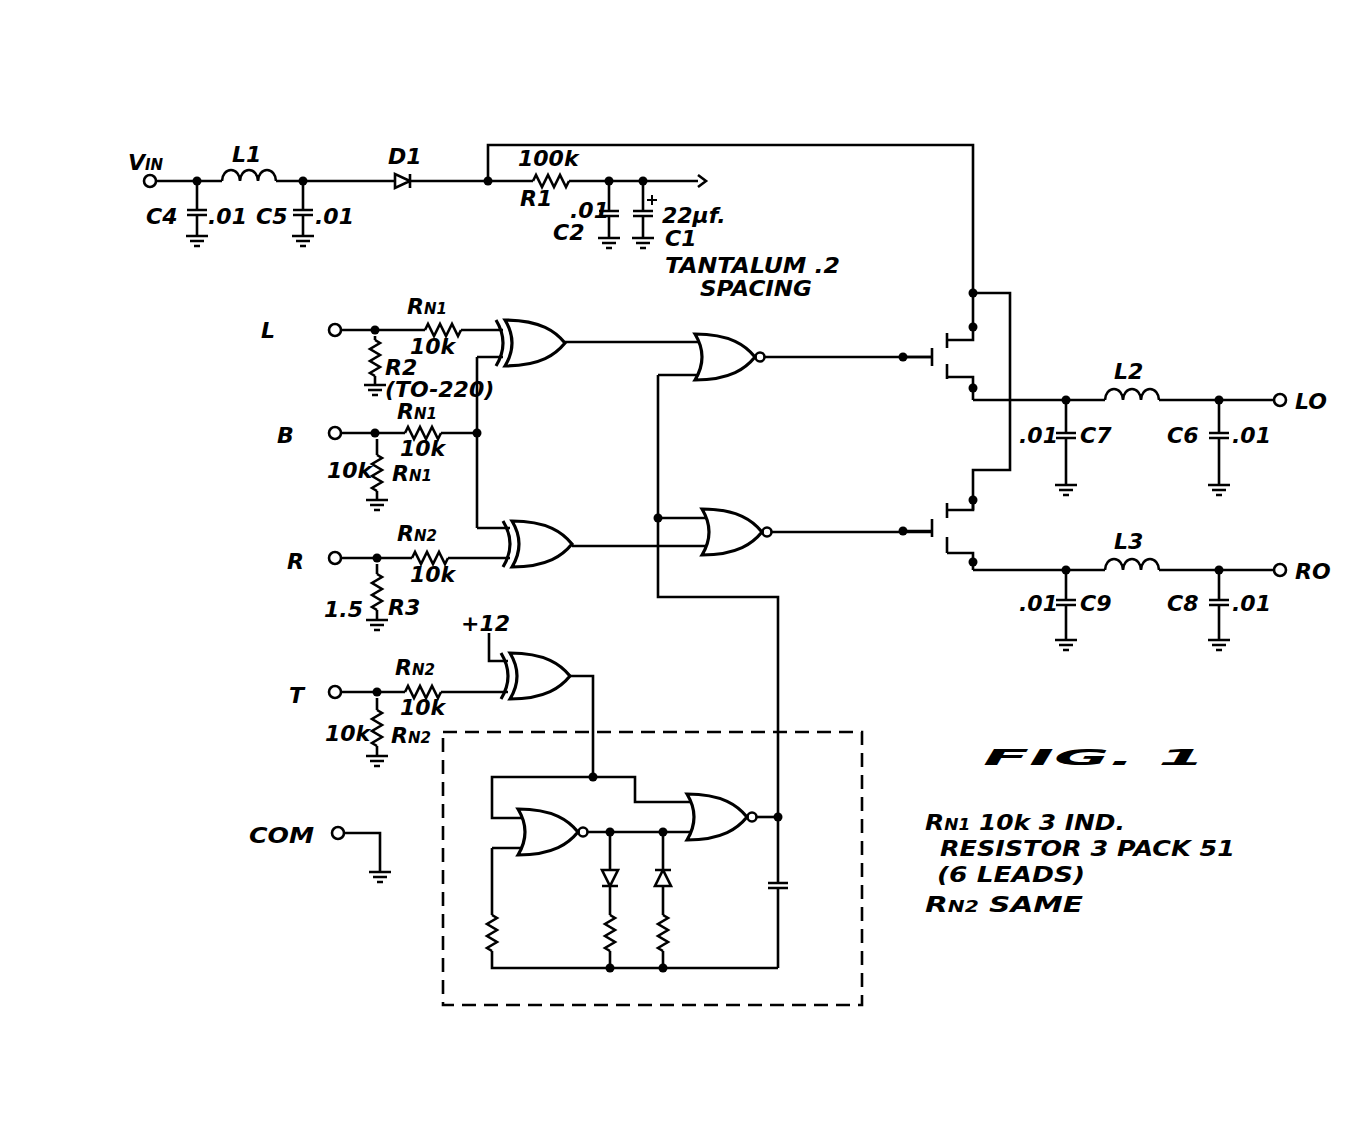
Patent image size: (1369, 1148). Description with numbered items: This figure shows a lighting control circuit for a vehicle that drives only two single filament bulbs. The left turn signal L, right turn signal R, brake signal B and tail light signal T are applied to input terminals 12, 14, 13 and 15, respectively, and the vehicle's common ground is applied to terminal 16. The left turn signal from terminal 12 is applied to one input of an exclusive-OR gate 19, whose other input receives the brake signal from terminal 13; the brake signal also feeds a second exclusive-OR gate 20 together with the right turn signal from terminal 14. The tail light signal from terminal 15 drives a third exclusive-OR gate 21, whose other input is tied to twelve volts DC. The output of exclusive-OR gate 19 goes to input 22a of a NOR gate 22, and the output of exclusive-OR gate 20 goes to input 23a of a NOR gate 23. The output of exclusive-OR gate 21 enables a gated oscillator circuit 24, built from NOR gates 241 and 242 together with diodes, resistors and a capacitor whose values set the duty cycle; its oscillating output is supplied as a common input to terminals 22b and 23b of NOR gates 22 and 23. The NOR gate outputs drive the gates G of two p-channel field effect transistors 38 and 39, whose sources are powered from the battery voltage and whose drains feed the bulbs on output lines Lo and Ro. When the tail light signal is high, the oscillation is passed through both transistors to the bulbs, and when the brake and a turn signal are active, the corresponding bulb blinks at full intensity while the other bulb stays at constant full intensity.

The input terminal 12 is at (318, 331).
The input terminal 13 is at (333, 426).
The input terminal 14 is at (335, 552).
The input terminal 15 is at (366, 360).
The terminal 16 is at (341, 825).
The exclusive-OR gate 19 is at (528, 366).
The exclusive-OR gate 20 is at (562, 524).
The exclusive-OR gate 21 is at (530, 655).
The NOR gate 22 is at (728, 334).
The input terminal of NOR gate 22 22a is at (612, 342).
The input of NOR gate 22 22b is at (658, 375).
The NOR gate 23 is at (735, 509).
The input of NOR gate 23 23a is at (640, 546).
The input of NOR gate 23 23b is at (654, 516).
The gated oscillator circuit 24 is at (443, 808).
The left output MOSFET transistor 38 is at (938, 342).
The right output MOSFET transistor 39 is at (932, 500).
The NOR gate 241 is at (540, 809).
The NOR gate 242 is at (740, 780).